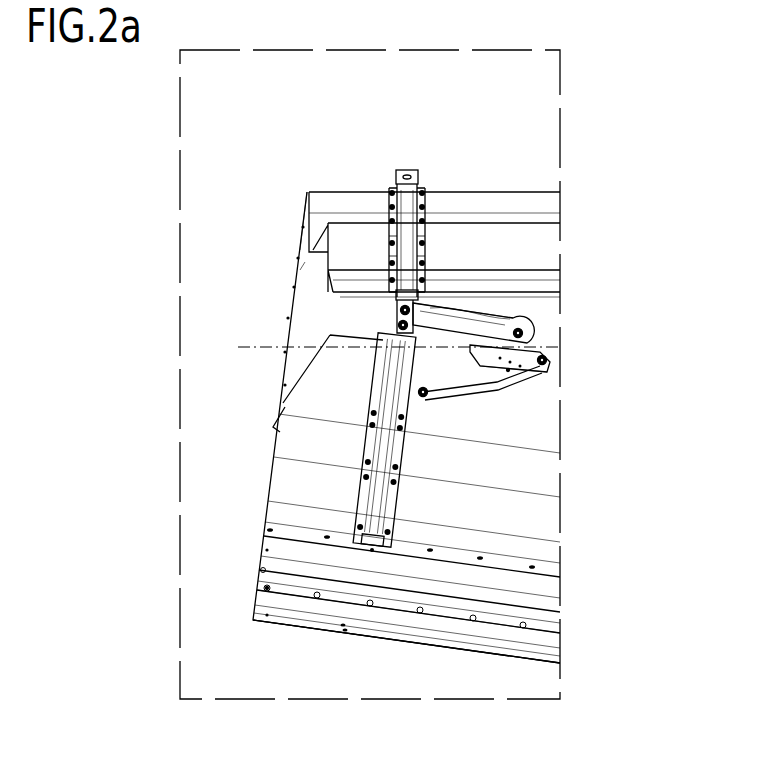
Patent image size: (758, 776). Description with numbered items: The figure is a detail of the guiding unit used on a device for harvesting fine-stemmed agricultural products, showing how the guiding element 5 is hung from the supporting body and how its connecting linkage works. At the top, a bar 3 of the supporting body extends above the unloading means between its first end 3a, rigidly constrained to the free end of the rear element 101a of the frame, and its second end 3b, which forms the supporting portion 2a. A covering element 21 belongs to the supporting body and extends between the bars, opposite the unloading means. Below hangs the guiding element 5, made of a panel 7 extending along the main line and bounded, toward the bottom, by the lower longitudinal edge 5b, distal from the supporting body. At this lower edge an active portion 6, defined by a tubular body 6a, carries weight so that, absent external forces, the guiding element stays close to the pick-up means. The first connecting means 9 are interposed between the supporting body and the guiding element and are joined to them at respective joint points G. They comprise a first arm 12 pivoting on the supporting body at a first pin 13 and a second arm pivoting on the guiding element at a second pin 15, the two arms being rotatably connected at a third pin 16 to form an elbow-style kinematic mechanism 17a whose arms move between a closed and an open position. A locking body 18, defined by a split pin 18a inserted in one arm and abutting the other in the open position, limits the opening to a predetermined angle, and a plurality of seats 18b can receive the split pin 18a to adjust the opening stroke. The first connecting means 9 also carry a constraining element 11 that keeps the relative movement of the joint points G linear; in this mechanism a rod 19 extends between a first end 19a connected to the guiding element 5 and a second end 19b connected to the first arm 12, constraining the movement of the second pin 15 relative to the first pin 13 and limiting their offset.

The supporting portion 2a is at (432, 232).
The bar 3 is at (428, 245).
The first end 3a is at (402, 170).
The second end 3b is at (385, 296).
The covering element 21 is at (528, 200).
The elbow-style kinematic mechanism 17a is at (520, 294).
The rear element 101a is at (307, 265).
The first pin 13 is at (307, 263).
The joint points G is at (400, 307).
The second pin 15 is at (400, 325).
The first connecting means 9 is at (365, 361).
The first end 19a is at (420, 388).
The panel 7 is at (430, 525).
The tubular body 6a is at (263, 588).
The active portion 6 is at (328, 583).
The lower longitudinal edge 5b is at (380, 620).
The guiding element 5 is at (499, 664).
The rod 19 is at (455, 411).
The constraining element 11 is at (477, 408).
The first arm 12 is at (525, 318).
The third pin 16 is at (527, 336).
The locking body 18 is at (545, 356).
The second end 19b is at (546, 362).
The split pin 18a is at (508, 372).
The seats 18b is at (548, 380).